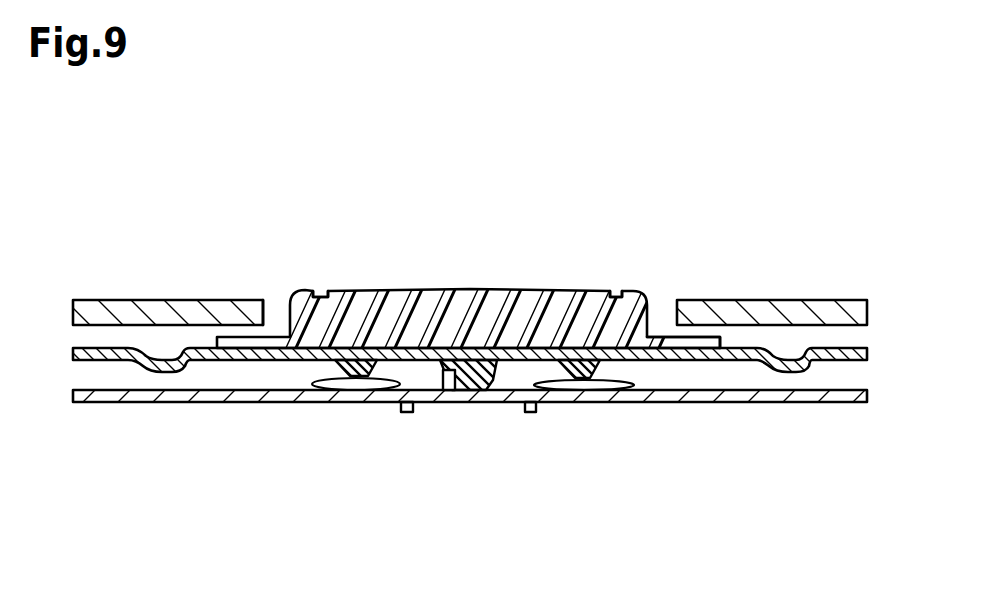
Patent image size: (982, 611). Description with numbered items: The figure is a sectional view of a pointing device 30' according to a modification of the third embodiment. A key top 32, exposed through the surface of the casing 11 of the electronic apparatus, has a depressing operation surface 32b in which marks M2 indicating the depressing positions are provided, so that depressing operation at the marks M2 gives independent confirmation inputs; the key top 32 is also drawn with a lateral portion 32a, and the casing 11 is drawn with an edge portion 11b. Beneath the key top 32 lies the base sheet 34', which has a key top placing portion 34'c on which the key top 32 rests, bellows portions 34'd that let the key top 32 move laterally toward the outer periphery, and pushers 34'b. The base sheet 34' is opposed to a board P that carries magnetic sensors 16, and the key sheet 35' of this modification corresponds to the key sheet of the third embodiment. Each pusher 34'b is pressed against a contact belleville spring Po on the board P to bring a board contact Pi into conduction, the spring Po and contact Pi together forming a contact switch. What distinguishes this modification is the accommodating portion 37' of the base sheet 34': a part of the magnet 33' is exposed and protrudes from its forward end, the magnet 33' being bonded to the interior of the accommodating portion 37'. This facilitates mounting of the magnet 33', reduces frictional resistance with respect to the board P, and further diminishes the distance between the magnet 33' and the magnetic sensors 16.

The pointing device 30' is at (695, 143).
The casing 11 is at (193, 300).
The edge of circuit board 11b is at (274, 300).
The marks M2 is at (323, 292).
The key top 32 is at (452, 292).
The flange of housing 32a is at (658, 337).
The depressing operation surface 32b is at (518, 292).
The base sheet 34' is at (479, 413).
The pusher 34'b is at (466, 432).
The key top placing portion 34'c is at (398, 286).
The bellows portions 34'd is at (468, 434).
The key sheet 35' is at (845, 422).
The accommodating portion 37' is at (469, 407).
The magnet 33' is at (468, 426).
The magnetic sensors 16 is at (402, 412).
The board P is at (93, 403).
The contact belleville spring Po is at (315, 386).
The board contact Pi is at (360, 380).